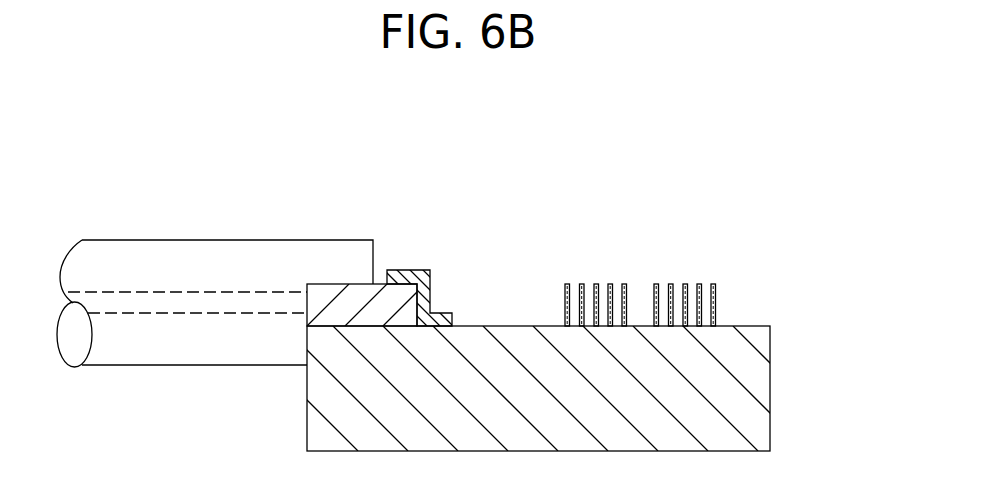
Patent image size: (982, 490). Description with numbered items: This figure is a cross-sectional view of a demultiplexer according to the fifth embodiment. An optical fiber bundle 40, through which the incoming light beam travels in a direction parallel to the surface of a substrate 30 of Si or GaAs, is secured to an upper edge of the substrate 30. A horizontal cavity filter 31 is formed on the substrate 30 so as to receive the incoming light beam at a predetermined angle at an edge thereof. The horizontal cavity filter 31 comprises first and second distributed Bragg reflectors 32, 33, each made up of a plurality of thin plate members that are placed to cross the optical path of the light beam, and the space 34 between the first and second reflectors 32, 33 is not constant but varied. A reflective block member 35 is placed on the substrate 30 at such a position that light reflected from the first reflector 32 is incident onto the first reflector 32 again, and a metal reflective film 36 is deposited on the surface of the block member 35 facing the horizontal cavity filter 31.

The substrate 30 is at (770, 382).
The horizontal cavity filter 31 is at (641, 249).
The first distributed Bragg reflector 32 is at (546, 277).
The second distributed Bragg reflector 33 is at (735, 277).
The space between the first and second reflectors 34 is at (639, 251).
The reflective block member 35 is at (325, 284).
The metal reflective film 36 is at (418, 270).
The optical fiber bundle 40 is at (240, 240).